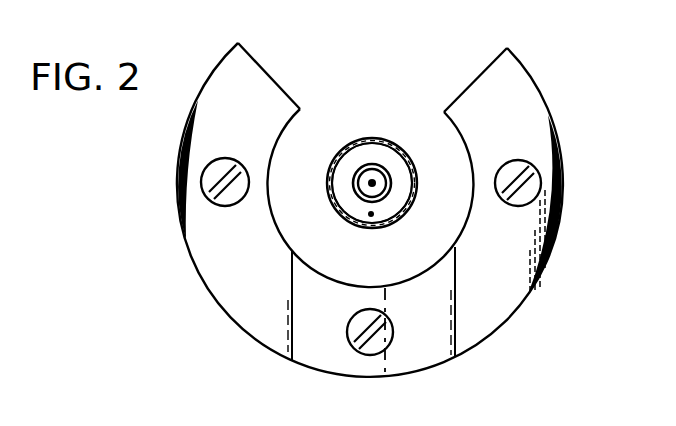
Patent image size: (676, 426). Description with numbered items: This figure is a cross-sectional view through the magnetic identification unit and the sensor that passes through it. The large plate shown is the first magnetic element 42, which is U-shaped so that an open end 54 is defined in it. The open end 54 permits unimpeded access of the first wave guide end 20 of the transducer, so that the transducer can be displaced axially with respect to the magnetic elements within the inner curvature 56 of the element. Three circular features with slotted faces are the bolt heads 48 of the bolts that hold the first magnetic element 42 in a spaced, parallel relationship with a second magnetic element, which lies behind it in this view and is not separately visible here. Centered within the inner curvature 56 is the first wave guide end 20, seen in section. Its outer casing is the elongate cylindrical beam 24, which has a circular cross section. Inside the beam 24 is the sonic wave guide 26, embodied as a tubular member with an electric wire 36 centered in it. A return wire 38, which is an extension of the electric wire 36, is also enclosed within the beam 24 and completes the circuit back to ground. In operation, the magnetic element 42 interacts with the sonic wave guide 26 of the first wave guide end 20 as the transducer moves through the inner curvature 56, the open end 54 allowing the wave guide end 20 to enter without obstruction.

The first wave guide end 20 is at (362, 140).
The elongate cylindrical beam 24 is at (393, 140).
The sonic wave guide 26 is at (391, 181).
The electric wire 36 is at (356, 180).
The return wire 38 is at (369, 218).
The first magnetic element 42 is at (528, 73).
The bolt heads 48 is at (209, 200).
The open end 54 is at (362, 80).
The inner curvature 56 is at (323, 274).